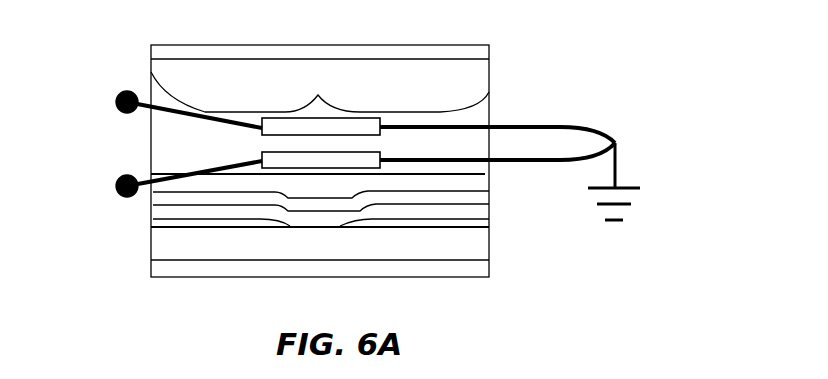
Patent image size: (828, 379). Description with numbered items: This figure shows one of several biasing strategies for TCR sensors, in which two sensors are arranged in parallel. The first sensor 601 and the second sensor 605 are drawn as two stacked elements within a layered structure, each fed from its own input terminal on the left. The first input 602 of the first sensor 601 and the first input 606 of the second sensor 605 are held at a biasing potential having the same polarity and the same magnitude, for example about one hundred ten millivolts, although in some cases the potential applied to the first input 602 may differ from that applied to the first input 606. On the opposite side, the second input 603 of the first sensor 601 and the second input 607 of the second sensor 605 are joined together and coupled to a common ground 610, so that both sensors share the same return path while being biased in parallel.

The first sensor 601 is at (310, 125).
The first input of the first sensor 602 is at (177, 111).
The second input of the first sensor 603 is at (512, 126).
The second sensor 605 is at (380, 152).
The first input of the second sensor 606 is at (213, 175).
The second input of the second sensor 607 is at (507, 165).
The ground 610 is at (618, 230).